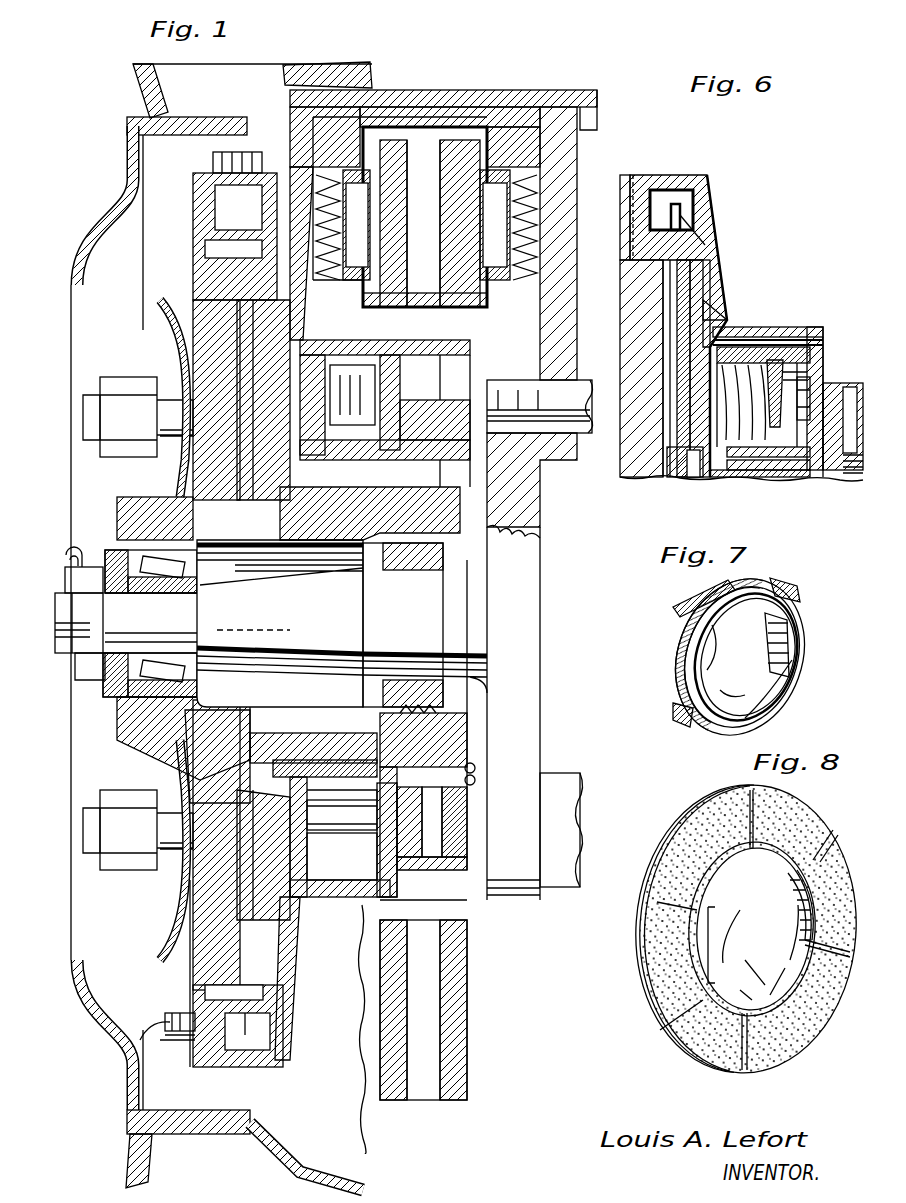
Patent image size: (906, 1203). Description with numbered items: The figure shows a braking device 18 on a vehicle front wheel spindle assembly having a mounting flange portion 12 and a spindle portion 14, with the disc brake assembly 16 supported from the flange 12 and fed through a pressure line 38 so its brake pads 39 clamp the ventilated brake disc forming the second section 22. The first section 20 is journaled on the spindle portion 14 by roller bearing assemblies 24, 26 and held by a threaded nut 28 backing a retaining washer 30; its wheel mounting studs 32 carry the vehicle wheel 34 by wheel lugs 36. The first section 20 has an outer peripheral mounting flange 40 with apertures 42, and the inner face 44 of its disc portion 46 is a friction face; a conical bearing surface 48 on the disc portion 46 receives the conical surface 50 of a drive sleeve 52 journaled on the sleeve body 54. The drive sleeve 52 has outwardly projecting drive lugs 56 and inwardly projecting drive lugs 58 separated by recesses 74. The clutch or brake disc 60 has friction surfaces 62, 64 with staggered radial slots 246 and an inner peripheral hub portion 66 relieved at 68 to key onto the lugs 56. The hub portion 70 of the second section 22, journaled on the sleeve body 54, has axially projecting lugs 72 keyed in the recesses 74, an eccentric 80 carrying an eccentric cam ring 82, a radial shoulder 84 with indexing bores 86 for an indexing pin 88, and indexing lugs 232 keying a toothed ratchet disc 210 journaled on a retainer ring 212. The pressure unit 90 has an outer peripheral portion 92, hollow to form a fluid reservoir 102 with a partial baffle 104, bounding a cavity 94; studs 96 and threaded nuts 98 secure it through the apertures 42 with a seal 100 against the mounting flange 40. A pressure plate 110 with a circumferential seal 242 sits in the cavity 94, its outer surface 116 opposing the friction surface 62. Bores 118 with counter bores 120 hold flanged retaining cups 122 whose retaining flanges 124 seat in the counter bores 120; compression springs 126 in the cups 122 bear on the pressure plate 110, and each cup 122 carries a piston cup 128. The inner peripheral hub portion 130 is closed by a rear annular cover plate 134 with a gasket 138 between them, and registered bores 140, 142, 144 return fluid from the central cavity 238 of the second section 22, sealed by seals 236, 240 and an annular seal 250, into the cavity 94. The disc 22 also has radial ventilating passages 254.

In FIG. 1, the mounting flange portion 12 is at (520, 497).
In FIG. 1, the spindle portion 14 is at (263, 630).
In FIG. 1, the disc brake assembly 16 is at (489, 86).
In FIG. 1, the braking device 18 is at (307, 688).
In FIG. 1, the first section 20 is at (203, 930).
In FIG. 1, the second section 22 is at (457, 970).
In FIG. 1, the roller bearing assembly 24 is at (417, 553).
In FIG. 1, the roller bearing assembly 26 is at (197, 567).
In FIG. 1, the threaded nut 28 is at (70, 571).
In FIG. 1, the retaining washer 30 is at (113, 673).
In FIG. 1, the wheel mounting studs 32 is at (87, 837).
In FIG. 1, the vehicle wheel 34 is at (77, 997).
In FIG. 1, the wheel lugs 36 is at (123, 860).
In FIG. 1, the pressure line 38 is at (597, 99).
In FIG. 1, the brake pads 39 is at (467, 247).
In FIG. 1, the outer peripheral mounting flange 40 is at (190, 1060).
In FIG. 1, the apertures 42 is at (193, 1037).
In FIG. 1, the inner face 44 is at (260, 860).
In FIG. 1, the disc portion 46 is at (207, 790).
In FIG. 1, the conical bearing surface 48 is at (252, 770).
In FIG. 1, the conical surface 50 is at (243, 477).
In FIG. 1, the drive sleeve 52 is at (253, 503).
In FIG. 7, the drive sleeve 52 is at (687, 673).
In FIG. 1, the sleeve body 54 is at (308, 527).
In FIG. 7, the drive lugs 56 is at (697, 603).
In FIG. 7, the drive lugs 58 is at (717, 640).
In FIG. 8, the clutch or brake disc 60 is at (652, 1040).
In FIG. 8, the friction surface 62 is at (660, 977).
In FIG. 8, the friction surface 64 is at (637, 920).
In FIG. 8, the inner peripheral hub portion 66 is at (773, 973).
In FIG. 8, the relieved areas 68 is at (727, 867).
In FIG. 1, the hub portion 70 is at (330, 747).
In FIG. 1, the axially projecting lugs 72 is at (313, 537).
In FIG. 7, the recesses 74 is at (780, 600).
In FIG. 1, the eccentric 80 is at (378, 815).
In FIG. 1, the eccentric cam ring 82 is at (300, 815).
In FIG. 1, the radial shoulder 84 is at (357, 483).
In FIG. 1, the indexing bores 86 is at (420, 745).
In FIG. 1, the indexing pin 88 is at (467, 753).
In FIG. 6, the pressure unit 90 is at (719, 245).
In FIG. 6, the outer peripheral portion 92 is at (670, 175).
In FIG. 6, the cavity or chamber 94 is at (713, 293).
In FIG. 1, the studs 96 is at (165, 1028).
In FIG. 1, the threaded nuts 98 is at (175, 1010).
In FIG. 6, the seal 100 is at (637, 173).
In FIG. 6, the fluid reservoir 102 is at (692, 216).
In FIG. 6, the partial baffle 104 is at (687, 180).
In FIG. 6, the pressure plate 110 is at (697, 340).
In FIG. 1, the outer surface 116 is at (195, 250).
In FIG. 6, the bores 118 is at (793, 477).
In FIG. 6, the counter bores 120 is at (720, 480).
In FIG. 6, the flanged retaining cups 122 is at (763, 477).
In FIG. 6, the retaining flanges 124 is at (747, 477).
In FIG. 6, the compression springs 126 is at (667, 473).
In FIG. 6, the piston cup 128 is at (810, 377).
In FIG. 1, the inner peripheral hub portion 130 is at (290, 770).
In FIG. 6, the inner peripheral hub portion 130 is at (800, 314).
In FIG. 1, the rear annular cover plate 134 is at (463, 857).
In FIG. 6, the rear annular cover plate 134 is at (813, 347).
In FIG. 6, the gasket 138 is at (840, 477).
In FIG. 6, the bores 140 is at (727, 330).
In FIG. 6, the bores 142 is at (807, 330).
In FIG. 6, the bores 144 is at (817, 330).
In FIG. 1, the toothed ratchet disc 210 is at (440, 807).
In FIG. 1, the retainer ring 212 is at (463, 833).
In FIG. 1, the indexing lugs 232 is at (477, 780).
In FIG. 1, the seal 236 is at (327, 790).
In FIG. 1, the central cavity 238 is at (433, 833).
In FIG. 1, the seal 240 is at (467, 797).
In FIG. 1, the circumferential seal 242 is at (290, 997).
In FIG. 8, the staggered radial slots 246 is at (753, 820).
In FIG. 1, the annular seal 250 is at (363, 777).
In FIG. 1, the ventilating passages 254 is at (427, 1077).